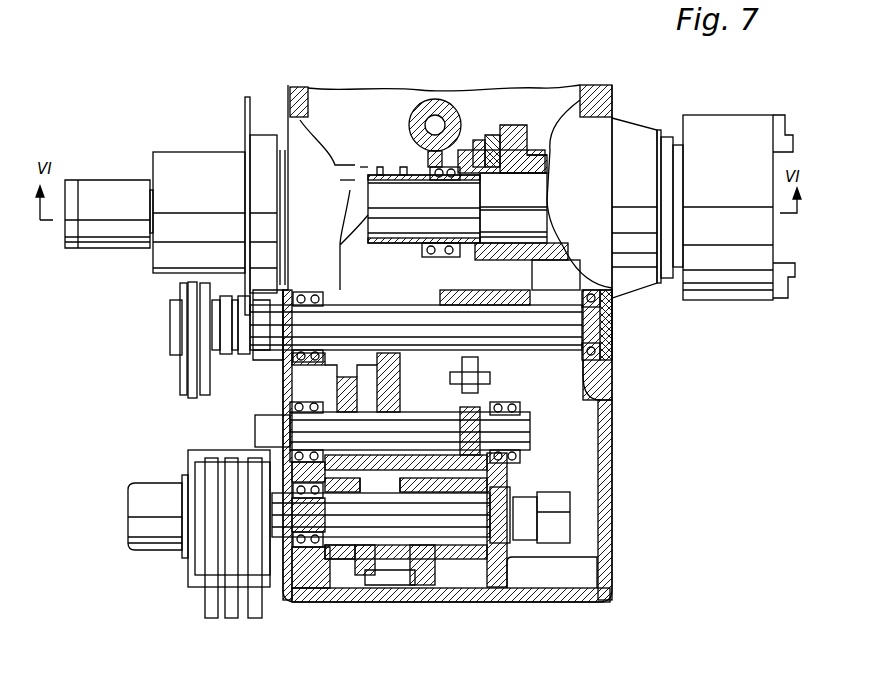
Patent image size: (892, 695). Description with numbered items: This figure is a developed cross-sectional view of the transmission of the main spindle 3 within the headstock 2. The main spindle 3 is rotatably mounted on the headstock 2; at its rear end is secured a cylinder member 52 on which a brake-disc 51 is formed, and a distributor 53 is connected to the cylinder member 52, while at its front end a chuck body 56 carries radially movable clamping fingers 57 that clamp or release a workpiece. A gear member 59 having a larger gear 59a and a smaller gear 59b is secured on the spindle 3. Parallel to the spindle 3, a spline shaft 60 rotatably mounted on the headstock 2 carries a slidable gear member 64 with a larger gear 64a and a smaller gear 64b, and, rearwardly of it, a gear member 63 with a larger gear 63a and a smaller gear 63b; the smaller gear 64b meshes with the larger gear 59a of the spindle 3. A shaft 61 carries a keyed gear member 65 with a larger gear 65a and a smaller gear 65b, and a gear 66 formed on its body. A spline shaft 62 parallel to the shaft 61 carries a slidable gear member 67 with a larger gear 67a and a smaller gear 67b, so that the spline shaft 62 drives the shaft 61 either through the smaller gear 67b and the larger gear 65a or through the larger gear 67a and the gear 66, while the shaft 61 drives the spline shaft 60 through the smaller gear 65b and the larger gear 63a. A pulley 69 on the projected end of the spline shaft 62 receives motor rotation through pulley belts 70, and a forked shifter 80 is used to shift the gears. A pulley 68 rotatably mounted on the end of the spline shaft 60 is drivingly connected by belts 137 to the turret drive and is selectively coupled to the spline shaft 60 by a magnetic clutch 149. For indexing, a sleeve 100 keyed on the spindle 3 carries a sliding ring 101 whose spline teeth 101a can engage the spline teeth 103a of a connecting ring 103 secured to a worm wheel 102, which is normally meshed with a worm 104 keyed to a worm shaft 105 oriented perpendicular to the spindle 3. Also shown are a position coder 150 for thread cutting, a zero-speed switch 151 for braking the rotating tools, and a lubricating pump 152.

The headstock 2 is at (537, 593).
The main spindle 3 is at (672, 153).
The brake-disc 51 is at (245, 107).
The cylinder member 52 is at (160, 170).
The distributor 53 is at (87, 205).
The chuck body 56 is at (740, 127).
The clamping fingers 57 is at (782, 287).
The gear member 59 is at (583, 84).
The larger gear 59a is at (537, 158).
The smaller gear 59b is at (515, 128).
The spline shaft 60 is at (568, 328).
The shaft 61 is at (523, 430).
The spline shaft 62 is at (360, 540).
The gear member 63 is at (360, 268).
The larger gear 63a is at (366, 205).
The smaller gear 63b is at (366, 235).
The gear member 64 is at (597, 373).
The larger gear 64a is at (462, 408).
The smaller gear 64b is at (530, 370).
The gear member 65 is at (378, 411).
The larger gear 65a is at (351, 365).
The smaller gear 65b is at (380, 483).
The gear 66 is at (480, 473).
The gear member 67 is at (385, 545).
The larger gear 67a is at (347, 545).
The smaller gear 67b is at (433, 573).
The pulley 68 is at (180, 338).
The pulley 69 is at (206, 588).
The pulley belts 70 is at (483, 383).
The forked shifter 80 is at (417, 580).
The sleeve 100 is at (300, 120).
The sliding ring 101 is at (352, 178).
The spline teeth 101a is at (379, 167).
The worm wheel 102 is at (495, 135).
The connecting ring 103 is at (420, 103).
The spline teeth 103a is at (420, 160).
The worm 104 is at (474, 142).
The worm shaft 105 is at (444, 103).
The belts 137 is at (186, 388).
The magnetic clutch 149 is at (236, 358).
The position coder 150 is at (219, 0).
The zero-speed switch 151 is at (140, 525).
The lubricating pump 152 is at (570, 517).